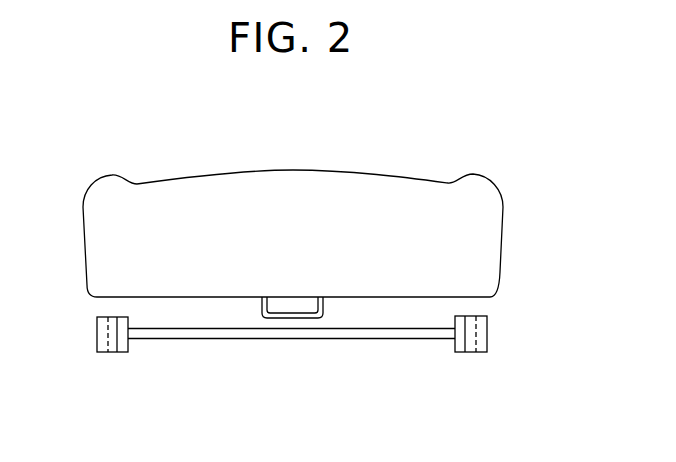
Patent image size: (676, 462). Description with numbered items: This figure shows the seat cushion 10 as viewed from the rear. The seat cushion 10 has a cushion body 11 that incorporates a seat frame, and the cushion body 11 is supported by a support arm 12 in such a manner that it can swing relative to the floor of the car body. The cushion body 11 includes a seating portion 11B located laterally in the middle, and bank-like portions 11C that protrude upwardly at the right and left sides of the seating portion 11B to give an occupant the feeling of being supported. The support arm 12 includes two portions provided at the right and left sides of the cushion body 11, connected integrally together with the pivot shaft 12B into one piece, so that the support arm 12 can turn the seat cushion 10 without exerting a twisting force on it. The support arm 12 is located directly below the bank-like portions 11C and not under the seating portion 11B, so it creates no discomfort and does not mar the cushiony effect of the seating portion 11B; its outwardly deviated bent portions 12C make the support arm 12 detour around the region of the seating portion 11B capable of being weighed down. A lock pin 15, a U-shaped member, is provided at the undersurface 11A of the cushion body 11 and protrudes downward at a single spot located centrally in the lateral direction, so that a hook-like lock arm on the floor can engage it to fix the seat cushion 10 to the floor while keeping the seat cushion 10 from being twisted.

The seat cushion 10 is at (361, 130).
The cushion body 11 is at (395, 188).
The undersurface 11A is at (372, 298).
The seating portion 11B is at (292, 170).
The bank-like portions 11C is at (110, 183).
The support arm 12 is at (102, 355).
The pivot shaft 12B is at (208, 333).
The bent portions 12C is at (100, 332).
The lock pin 15 is at (290, 317).